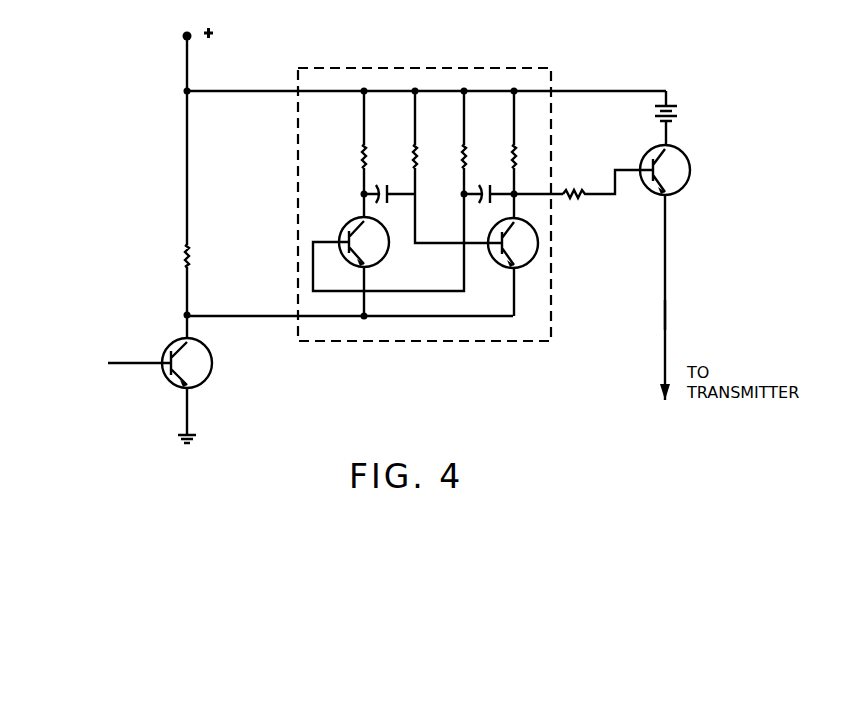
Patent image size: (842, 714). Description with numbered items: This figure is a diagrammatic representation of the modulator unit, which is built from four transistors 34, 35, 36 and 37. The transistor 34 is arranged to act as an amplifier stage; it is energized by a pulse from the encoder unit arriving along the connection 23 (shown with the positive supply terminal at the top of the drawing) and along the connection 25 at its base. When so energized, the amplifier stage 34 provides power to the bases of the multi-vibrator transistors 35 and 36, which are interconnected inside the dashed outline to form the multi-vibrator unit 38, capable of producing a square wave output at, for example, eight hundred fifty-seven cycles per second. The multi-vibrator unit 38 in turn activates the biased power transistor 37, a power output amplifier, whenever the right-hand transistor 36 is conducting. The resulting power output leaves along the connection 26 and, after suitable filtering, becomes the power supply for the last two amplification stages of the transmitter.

The connection 23 is at (186, 50).
The connection 25 is at (126, 365).
The connection 26 is at (662, 326).
The transistor 34 is at (212, 363).
The transistor 35 is at (345, 228).
The transistor 36 is at (540, 233).
The transistor 37 is at (689, 163).
The multi-vibrator unit 38 is at (412, 67).